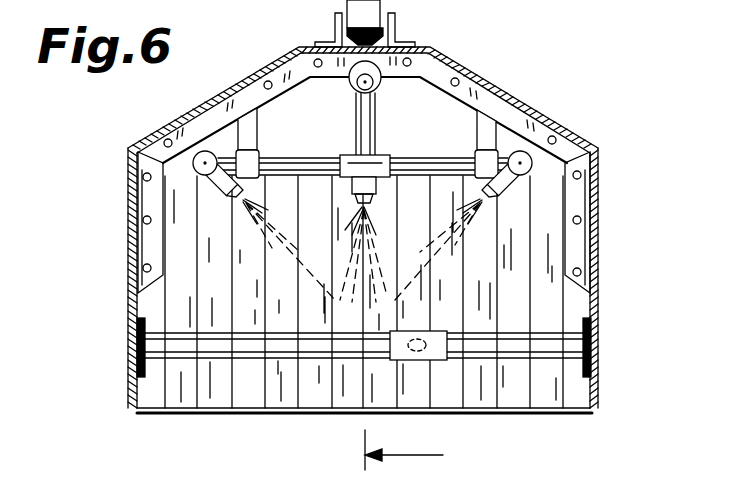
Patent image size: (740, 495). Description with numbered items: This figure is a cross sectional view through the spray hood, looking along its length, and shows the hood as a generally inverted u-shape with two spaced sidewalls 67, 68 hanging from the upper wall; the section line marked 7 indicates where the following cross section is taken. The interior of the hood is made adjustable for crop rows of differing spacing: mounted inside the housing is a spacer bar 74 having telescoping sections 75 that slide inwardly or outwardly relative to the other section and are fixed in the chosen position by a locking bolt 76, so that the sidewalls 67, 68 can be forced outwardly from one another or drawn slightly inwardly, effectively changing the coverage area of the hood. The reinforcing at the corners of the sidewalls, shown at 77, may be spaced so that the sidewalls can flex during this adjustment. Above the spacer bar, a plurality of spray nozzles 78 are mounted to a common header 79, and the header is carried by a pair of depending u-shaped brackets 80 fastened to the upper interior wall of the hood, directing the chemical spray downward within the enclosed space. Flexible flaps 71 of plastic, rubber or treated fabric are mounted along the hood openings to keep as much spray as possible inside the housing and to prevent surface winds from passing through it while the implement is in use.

The section line 7- 7 is at (416, 450).
The sidewall 67 is at (128, 311).
The sidewall 68 is at (597, 268).
The flexible flaps 71 is at (243, 393).
The spacer bar 74 is at (318, 356).
The telescoping sections 75 is at (503, 357).
The locking bolt 76 is at (428, 360).
The reinforcing at the corners of the sidewalls 77 is at (138, 160).
The spray nozzles 78 is at (210, 193).
The common header 79 is at (317, 137).
The depending u-shaped brackets 80 is at (247, 108).